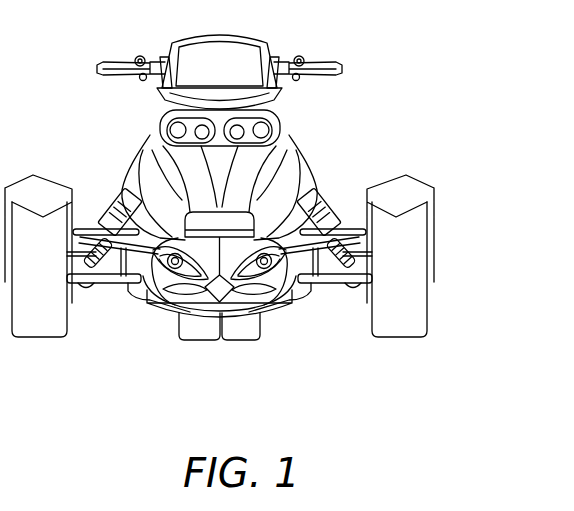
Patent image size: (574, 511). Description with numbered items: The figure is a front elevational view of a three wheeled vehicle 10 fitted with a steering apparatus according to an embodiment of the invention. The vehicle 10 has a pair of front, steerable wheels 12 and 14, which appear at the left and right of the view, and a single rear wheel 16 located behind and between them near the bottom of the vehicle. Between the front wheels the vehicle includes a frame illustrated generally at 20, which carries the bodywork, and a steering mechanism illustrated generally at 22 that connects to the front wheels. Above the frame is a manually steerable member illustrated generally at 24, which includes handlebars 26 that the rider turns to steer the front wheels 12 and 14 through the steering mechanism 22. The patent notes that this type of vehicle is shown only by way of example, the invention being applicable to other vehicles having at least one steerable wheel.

The three wheeled vehicle 10 is at (272, 213).
The front steerable wheel 12 is at (40, 320).
The front steerable wheel 14 is at (403, 320).
The rear wheel 16 is at (240, 327).
The frame 20 is at (318, 135).
The steering mechanism 22 is at (334, 296).
The manually steerable member 24 is at (318, 42).
The handlebars 26 is at (137, 57).